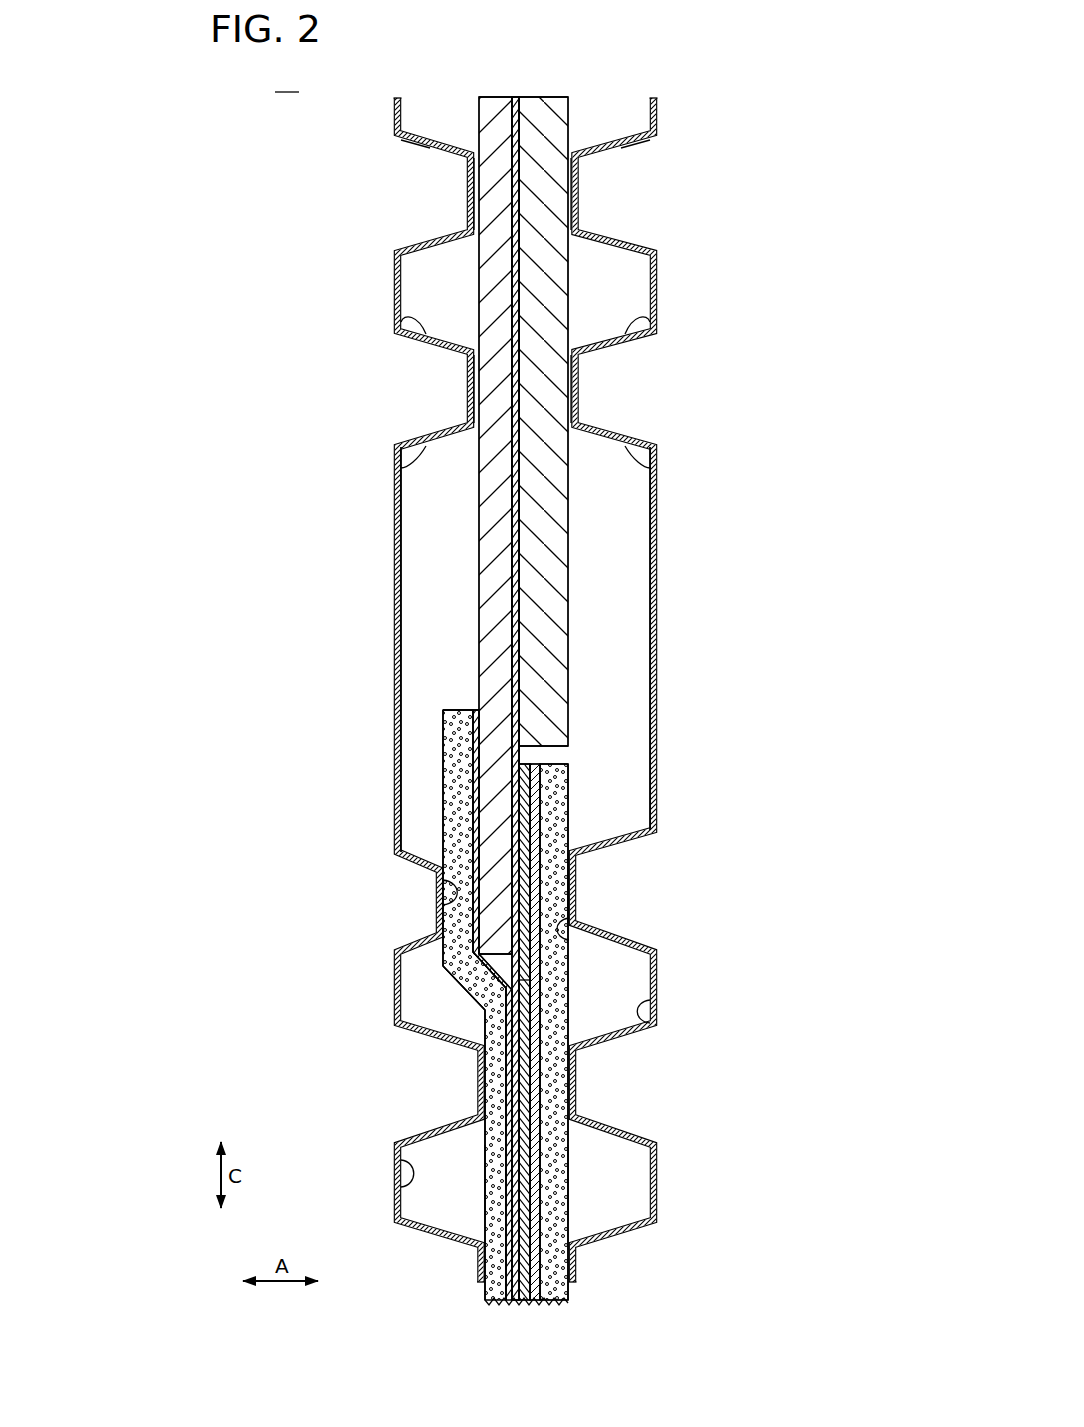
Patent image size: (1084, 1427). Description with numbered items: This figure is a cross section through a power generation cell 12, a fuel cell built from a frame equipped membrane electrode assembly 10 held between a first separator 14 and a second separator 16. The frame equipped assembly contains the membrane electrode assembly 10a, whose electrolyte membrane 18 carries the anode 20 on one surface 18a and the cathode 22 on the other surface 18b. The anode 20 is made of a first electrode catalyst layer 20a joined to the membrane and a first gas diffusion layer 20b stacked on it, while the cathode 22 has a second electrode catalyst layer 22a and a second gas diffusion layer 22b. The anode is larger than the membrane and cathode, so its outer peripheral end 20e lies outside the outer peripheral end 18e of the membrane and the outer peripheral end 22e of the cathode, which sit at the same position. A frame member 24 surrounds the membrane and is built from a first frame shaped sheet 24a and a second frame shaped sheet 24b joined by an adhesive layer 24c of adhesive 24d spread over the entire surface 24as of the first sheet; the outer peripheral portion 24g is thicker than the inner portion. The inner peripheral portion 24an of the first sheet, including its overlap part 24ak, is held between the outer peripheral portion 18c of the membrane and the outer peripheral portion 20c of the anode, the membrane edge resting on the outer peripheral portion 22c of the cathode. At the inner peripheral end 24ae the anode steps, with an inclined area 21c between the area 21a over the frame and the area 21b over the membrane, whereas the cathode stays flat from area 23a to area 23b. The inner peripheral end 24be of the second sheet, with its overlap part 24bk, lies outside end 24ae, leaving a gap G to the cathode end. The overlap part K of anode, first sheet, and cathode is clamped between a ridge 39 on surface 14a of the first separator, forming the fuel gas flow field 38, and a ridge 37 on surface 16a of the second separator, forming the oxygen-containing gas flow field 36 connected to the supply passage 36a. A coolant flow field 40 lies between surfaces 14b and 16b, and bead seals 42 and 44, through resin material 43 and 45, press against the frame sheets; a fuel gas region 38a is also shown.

The power generation cell 12 is at (288, 80).
The frame equipped membrane electrode assembly 10 is at (430, 672).
The membrane electrode assembly 10a is at (484, 1165).
The first separator 14 is at (393, 763).
The surface of the first separator 14a is at (396, 1185).
The surface of the first separator 14b is at (394, 515).
The second separator 16 is at (660, 697).
The surface of the second separator 16a is at (650, 1020).
The surface of the second separator 16b is at (660, 530).
The electrolyte membrane 18 is at (533, 985).
The one surface of the electrolyte membrane 18a is at (510, 990).
The surface of the electrolyte membrane 18b is at (560, 985).
The outer peripheral portion of the electrolyte membrane 18c is at (525, 812).
The outer peripheral end of the electrolyte membrane 18e is at (522, 762).
The anode 20 is at (406, 984).
The first electrode catalyst layer 20a is at (495, 1068).
The first gas diffusion layer 20b is at (509, 1082).
The outer peripheral portion of the anode 20c is at (455, 798).
The outer peripheral end of the anode 20e is at (455, 708).
The area overlapped with the inner peripheral portion 21a is at (455, 733).
The area overlapped with the electrolyte membrane 21b is at (487, 1263).
The inclined area 21c is at (475, 985).
The cathode 22 is at (642, 1030).
The second electrode catalyst layer 22a is at (535, 1088).
The second gas diffusion layer 22b is at (550, 1113).
The outer peripheral portion of the cathode 22c is at (568, 830).
The outer peripheral end of the cathode 22e is at (565, 760).
The area overlapped with the inner peripheral portion 23a is at (576, 872).
The area overlapped with the electrolyte membrane 23b is at (557, 1168).
The frame member 24 is at (510, 663).
The first frame shaped sheet 24a is at (488, 283).
The second frame shaped sheet 24b is at (540, 215).
The adhesive layer 24c is at (517, 620).
The adhesive 24d is at (517, 620).
The outer peripheral portion of the frame member 24g is at (570, 122).
The surface of the first frame shaped sheet 24as is at (517, 557).
The overlap part 24bk is at (540, 738).
The inner peripheral end of the second frame shaped sheet 24be is at (530, 757).
The inner peripheral portion of the first frame shaped sheet 24an is at (495, 850).
The overlap part 24ak is at (495, 850).
The inner peripheral end of the first frame shaped sheet 24ae is at (490, 975).
The oxygen-containing gas flow field 36 is at (610, 1202).
The oxygen-containing gas supply passage 36a is at (625, 643).
The ridge 37 is at (565, 936).
The fuel gas flow field 38 is at (442, 1202).
The hydrogen gas chamber 38a is at (420, 566).
The ridge 39 is at (450, 896).
The coolant flow field 40 is at (425, 887).
The bead seal 42 is at (421, 136).
The resin material 43 is at (468, 187).
The bead seal 44 is at (622, 136).
The resin material 45 is at (579, 187).
The gap G is at (545, 768).
The overlap part K is at (576, 897).